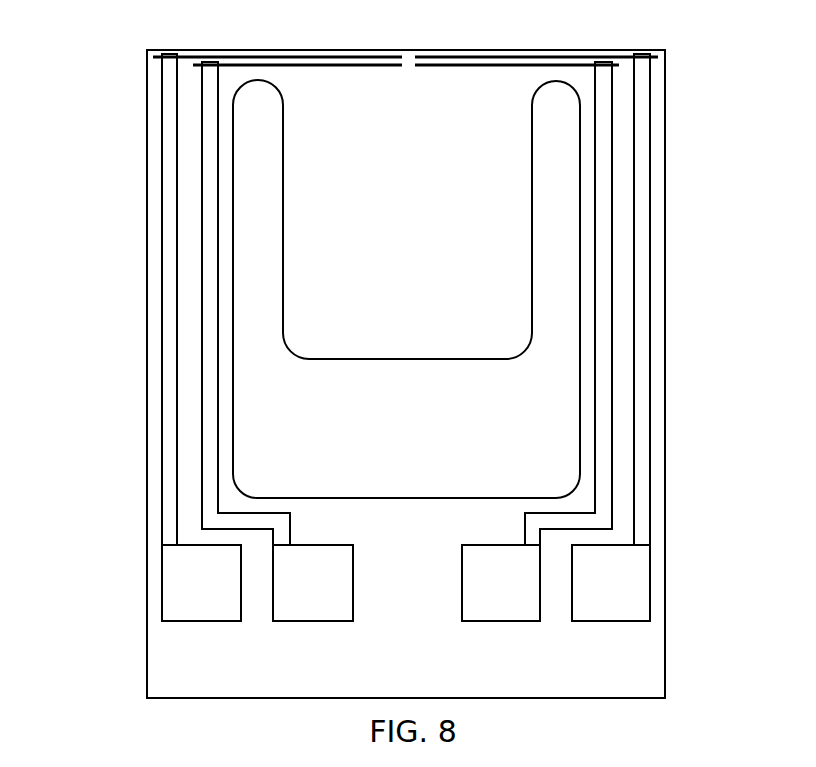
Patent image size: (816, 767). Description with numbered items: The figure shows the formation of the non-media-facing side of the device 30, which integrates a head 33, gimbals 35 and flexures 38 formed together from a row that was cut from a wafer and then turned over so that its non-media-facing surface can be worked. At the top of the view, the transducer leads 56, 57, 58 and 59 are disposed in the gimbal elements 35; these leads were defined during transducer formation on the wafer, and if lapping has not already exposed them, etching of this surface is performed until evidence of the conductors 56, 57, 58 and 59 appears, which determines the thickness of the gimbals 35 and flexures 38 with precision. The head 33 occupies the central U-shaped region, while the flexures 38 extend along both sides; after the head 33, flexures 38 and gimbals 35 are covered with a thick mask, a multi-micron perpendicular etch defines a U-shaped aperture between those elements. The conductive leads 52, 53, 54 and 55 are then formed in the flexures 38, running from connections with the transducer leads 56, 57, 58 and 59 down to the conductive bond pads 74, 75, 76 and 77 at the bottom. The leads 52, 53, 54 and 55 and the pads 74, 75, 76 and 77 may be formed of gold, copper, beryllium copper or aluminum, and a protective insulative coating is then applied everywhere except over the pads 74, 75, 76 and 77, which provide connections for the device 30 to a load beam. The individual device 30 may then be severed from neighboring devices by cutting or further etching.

The device 30 is at (92, 60).
The head 33 is at (413, 360).
The gimbal 35 is at (258, 82).
The flexure 38 is at (150, 296).
The conductive lead 52 is at (650, 390).
The conductive lead 53 is at (602, 452).
The conductive lead 54 is at (208, 468).
The conductive lead 55 is at (178, 388).
The transducer lead 56 is at (490, 58).
The transducer lead 57 is at (380, 67).
The transducer lead 58 is at (318, 58).
The transducer lead 59 is at (443, 67).
The conductive bond pad 74 is at (618, 621).
The conductive bond pad 75 is at (498, 621).
The conductive bond pad 76 is at (310, 621).
The conductive bond pad 77 is at (200, 621).